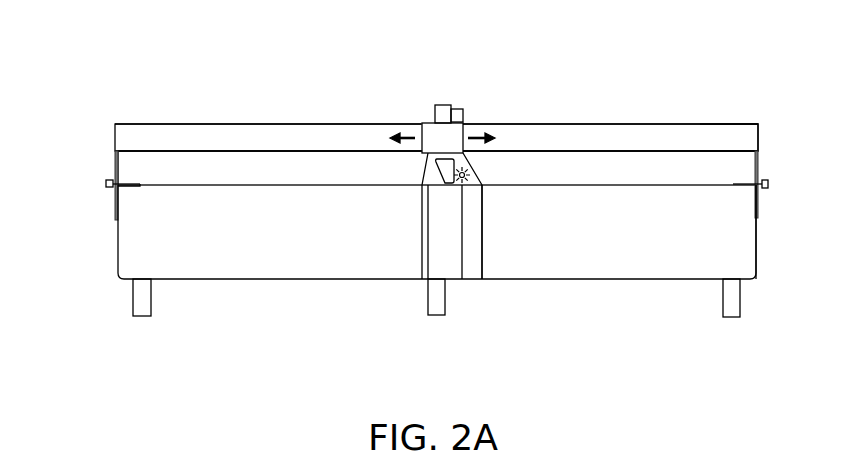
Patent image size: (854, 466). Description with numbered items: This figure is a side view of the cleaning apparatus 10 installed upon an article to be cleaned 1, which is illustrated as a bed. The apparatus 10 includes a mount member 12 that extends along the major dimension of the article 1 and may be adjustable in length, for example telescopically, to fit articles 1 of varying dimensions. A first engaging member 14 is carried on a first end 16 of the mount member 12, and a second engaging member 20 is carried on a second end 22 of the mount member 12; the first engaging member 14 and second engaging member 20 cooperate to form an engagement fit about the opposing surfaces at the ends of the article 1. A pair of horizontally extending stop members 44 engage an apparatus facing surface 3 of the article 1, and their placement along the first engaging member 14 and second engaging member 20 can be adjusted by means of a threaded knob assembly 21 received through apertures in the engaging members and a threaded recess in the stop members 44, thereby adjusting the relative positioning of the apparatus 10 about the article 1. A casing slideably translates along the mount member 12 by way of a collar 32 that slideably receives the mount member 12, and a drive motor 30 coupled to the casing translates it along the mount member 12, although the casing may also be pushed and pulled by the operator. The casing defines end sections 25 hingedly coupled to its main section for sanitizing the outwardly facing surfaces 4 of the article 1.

The cleaning apparatus 10 is at (233, 66).
The article to be cleaned 1 is at (128, 252).
The apparatus facing surface 3 is at (148, 183).
The outwardly facing surfaces 4 is at (685, 267).
The mount member 12 is at (557, 135).
The first engaging member 14 is at (117, 160).
The first end 16 is at (173, 140).
The second engaging member 20 is at (758, 160).
The threaded knob assembly 21 is at (105, 185).
The second end 22 is at (717, 137).
The end sections 25 is at (450, 262).
The drive motor 30 is at (442, 105).
The collar 32 is at (437, 138).
The horizontally extending stop members 44 is at (132, 188).